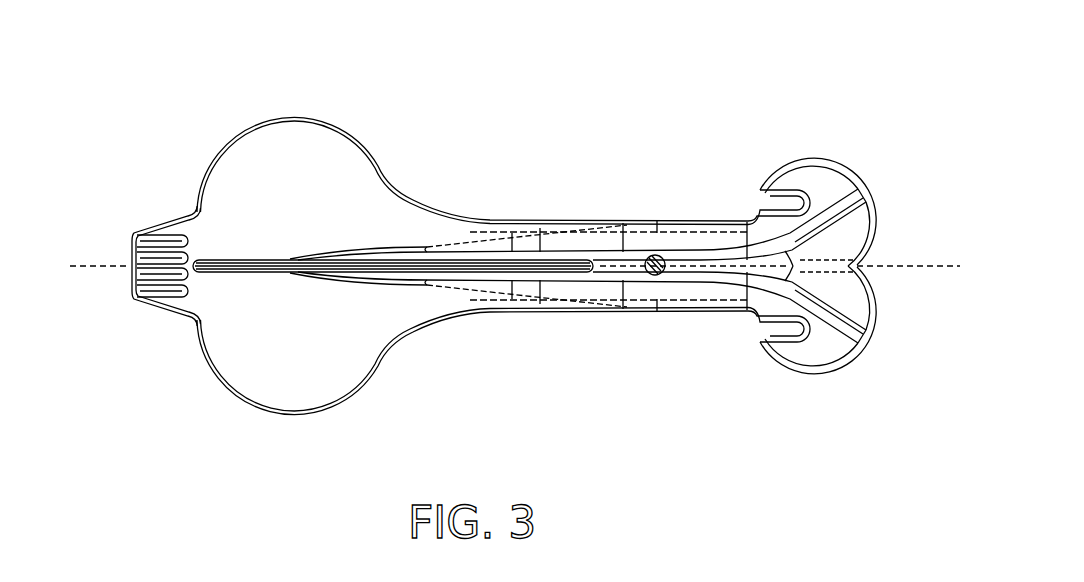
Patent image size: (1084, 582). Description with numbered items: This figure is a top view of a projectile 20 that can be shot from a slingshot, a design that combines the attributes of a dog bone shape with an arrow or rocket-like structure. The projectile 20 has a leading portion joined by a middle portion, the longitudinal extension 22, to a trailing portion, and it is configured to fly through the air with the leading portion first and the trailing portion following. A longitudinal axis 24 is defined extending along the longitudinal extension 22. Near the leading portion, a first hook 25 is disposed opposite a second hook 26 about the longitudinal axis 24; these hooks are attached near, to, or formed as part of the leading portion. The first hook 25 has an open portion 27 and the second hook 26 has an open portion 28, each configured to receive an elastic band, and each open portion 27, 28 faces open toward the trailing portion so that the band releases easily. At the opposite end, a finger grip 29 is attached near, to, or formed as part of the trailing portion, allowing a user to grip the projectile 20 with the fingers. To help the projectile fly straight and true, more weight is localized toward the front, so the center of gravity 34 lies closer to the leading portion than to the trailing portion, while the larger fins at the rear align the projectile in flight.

The projectile 20 is at (500, 82).
The longitudinal extension 22 is at (607, 262).
The longitudinal axis 24 is at (95, 265).
The first hook 25 is at (762, 339).
The second hook 26 is at (767, 189).
The open portion 27 is at (763, 327).
The open portion 28 is at (762, 207).
The finger grip 29 is at (152, 295).
The center of gravity 34 is at (653, 275).